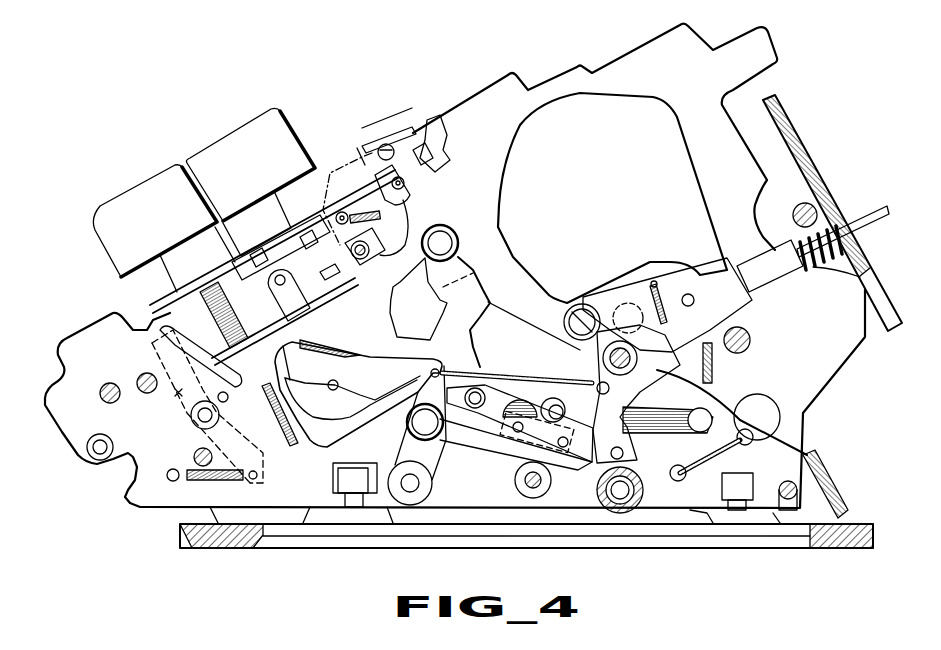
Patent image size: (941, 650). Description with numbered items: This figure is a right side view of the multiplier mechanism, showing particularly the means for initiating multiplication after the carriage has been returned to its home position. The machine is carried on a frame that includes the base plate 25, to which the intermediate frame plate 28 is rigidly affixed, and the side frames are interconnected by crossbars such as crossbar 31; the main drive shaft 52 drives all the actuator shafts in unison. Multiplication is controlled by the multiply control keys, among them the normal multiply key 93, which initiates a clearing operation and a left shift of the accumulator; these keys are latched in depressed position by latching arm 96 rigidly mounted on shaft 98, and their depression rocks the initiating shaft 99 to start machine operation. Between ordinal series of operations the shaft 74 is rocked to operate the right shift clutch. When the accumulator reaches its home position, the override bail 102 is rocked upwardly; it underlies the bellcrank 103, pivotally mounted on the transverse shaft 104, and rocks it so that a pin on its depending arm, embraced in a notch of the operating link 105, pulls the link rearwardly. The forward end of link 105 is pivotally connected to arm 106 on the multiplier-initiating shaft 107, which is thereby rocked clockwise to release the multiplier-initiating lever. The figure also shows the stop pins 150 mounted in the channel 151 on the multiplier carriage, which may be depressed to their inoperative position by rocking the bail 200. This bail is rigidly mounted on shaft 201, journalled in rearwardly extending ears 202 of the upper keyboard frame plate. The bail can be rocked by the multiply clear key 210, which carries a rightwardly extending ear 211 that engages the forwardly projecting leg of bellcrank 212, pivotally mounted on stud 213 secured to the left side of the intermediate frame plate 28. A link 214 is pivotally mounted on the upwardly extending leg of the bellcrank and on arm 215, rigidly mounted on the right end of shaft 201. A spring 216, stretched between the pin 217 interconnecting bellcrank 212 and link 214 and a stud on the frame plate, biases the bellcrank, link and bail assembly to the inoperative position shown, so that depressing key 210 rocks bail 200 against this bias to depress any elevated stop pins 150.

The intermediate frame plate 28 is at (87, 334).
The base plate 25 is at (450, 542).
The normal multiply key 93 is at (162, 173).
The multiply clear key 210 is at (273, 118).
The ear 211 is at (310, 227).
The bellcrank 212 is at (343, 297).
The stud 213 is at (364, 255).
The link 214 is at (383, 195).
The arm 215 is at (392, 138).
The spring 216 is at (368, 222).
The pin 217 is at (342, 212).
The bail 200 is at (407, 135).
The shaft 201 is at (386, 144).
The ears 202 is at (360, 160).
The stop pins 150 is at (437, 138).
The channel 151 is at (428, 158).
The latching arm 96 is at (176, 396).
The shaft 98 is at (196, 423).
The arm 106 is at (403, 452).
The multiplier-initiating shaft 107 is at (416, 485).
The operating link 105 is at (487, 433).
The initiating shaft 99 is at (522, 484).
The transverse shaft 104 is at (618, 350).
The bellcrank 103 is at (707, 312).
The bail 102 is at (713, 375).
The shaft 74 is at (785, 481).
The crossbar 31 is at (800, 155).
The main drive shaft 52 is at (795, 212).